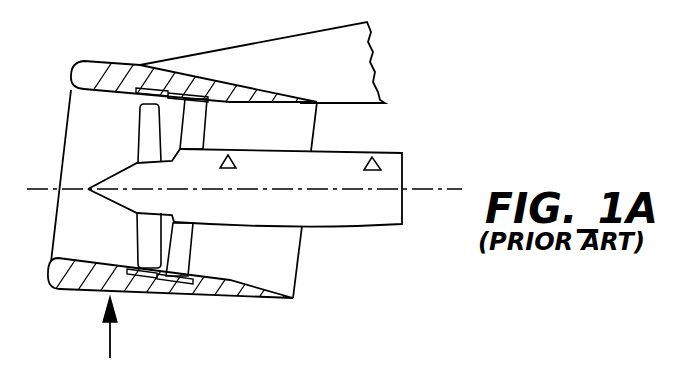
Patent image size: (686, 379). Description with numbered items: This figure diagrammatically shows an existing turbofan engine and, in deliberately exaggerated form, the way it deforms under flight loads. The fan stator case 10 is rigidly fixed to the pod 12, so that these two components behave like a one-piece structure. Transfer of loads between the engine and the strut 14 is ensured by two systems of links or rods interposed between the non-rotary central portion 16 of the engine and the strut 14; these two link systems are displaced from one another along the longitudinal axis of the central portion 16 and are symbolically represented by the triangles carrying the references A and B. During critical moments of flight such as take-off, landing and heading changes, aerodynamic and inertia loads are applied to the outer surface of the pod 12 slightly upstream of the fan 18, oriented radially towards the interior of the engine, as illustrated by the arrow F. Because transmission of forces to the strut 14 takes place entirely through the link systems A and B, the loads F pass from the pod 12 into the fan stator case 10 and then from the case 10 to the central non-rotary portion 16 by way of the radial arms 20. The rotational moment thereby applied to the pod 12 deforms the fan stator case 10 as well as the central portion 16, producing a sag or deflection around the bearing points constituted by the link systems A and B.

The fan stator case 10 is at (158, 279).
The pod 12 is at (82, 72).
The strut 14 is at (362, 44).
The non-rotary central portion 16 is at (394, 215).
The fan 18 is at (145, 128).
The radial arms 20 is at (198, 115).
The link system A is at (228, 157).
The link system B is at (374, 160).
The loads F is at (112, 331).